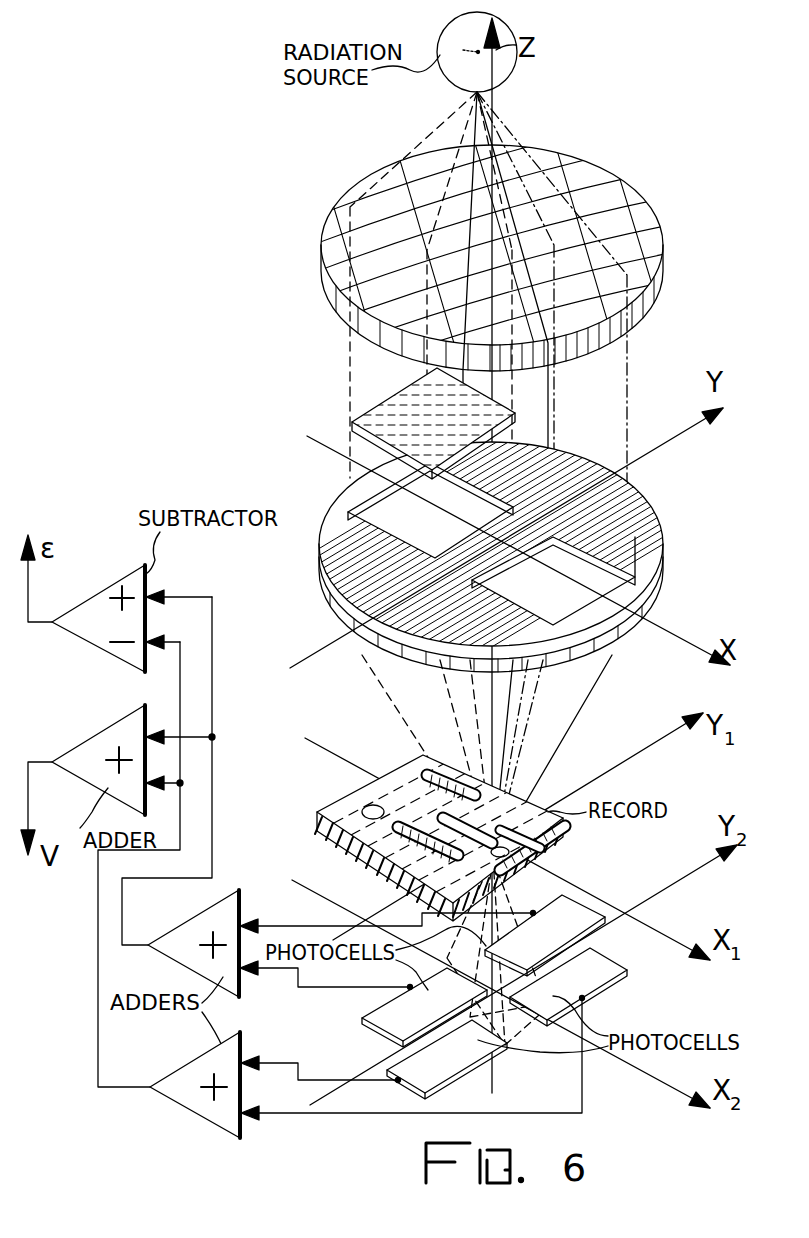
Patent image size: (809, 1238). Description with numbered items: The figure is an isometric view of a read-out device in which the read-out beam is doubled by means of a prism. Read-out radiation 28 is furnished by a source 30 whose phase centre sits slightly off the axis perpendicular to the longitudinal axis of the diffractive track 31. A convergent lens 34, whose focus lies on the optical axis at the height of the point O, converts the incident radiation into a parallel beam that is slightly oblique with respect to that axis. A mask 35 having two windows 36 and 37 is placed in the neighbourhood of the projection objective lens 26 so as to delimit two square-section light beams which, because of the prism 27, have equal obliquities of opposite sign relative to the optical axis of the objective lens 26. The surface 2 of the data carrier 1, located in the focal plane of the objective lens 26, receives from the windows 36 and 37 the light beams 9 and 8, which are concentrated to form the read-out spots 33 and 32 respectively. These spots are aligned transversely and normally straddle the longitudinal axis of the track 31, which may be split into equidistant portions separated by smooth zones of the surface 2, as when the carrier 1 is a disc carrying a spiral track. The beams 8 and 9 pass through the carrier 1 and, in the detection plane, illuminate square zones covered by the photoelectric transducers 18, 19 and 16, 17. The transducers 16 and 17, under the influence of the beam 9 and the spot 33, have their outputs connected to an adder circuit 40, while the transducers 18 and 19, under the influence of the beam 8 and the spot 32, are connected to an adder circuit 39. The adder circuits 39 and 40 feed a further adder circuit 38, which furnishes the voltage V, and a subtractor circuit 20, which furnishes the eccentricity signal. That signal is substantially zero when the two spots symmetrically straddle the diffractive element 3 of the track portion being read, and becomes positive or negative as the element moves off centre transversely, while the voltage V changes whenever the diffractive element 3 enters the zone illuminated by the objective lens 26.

The source 30 is at (510, 70).
The read-out radiation 28 is at (418, 112).
The convergent lens 34 is at (636, 178).
The prism 27 is at (370, 406).
The mask 35 is at (648, 492).
The window 36 is at (378, 527).
The window 37 is at (530, 613).
The projection objective lens 26 is at (656, 612).
The light beam 9 is at (412, 688).
The light beam 8 is at (583, 688).
The diffractive track 31 is at (422, 776).
The surface 2 is at (335, 800).
The data carrier 1 is at (332, 828).
The diffractive element 3 is at (525, 865).
The read-out spot 32 is at (540, 856).
The read-out spot 33 is at (510, 866).
The photoelectric transducer 19 is at (578, 906).
The photoelectric transducer 18 is at (358, 1020).
The photoelectric transducer 17 is at (600, 994).
The photoelectric transducer 16 is at (476, 1074).
The subtractor circuit 20 is at (96, 592).
The adder circuit 38 is at (90, 737).
The adder circuit 39 is at (162, 932).
The adder circuit 40 is at (166, 1072).